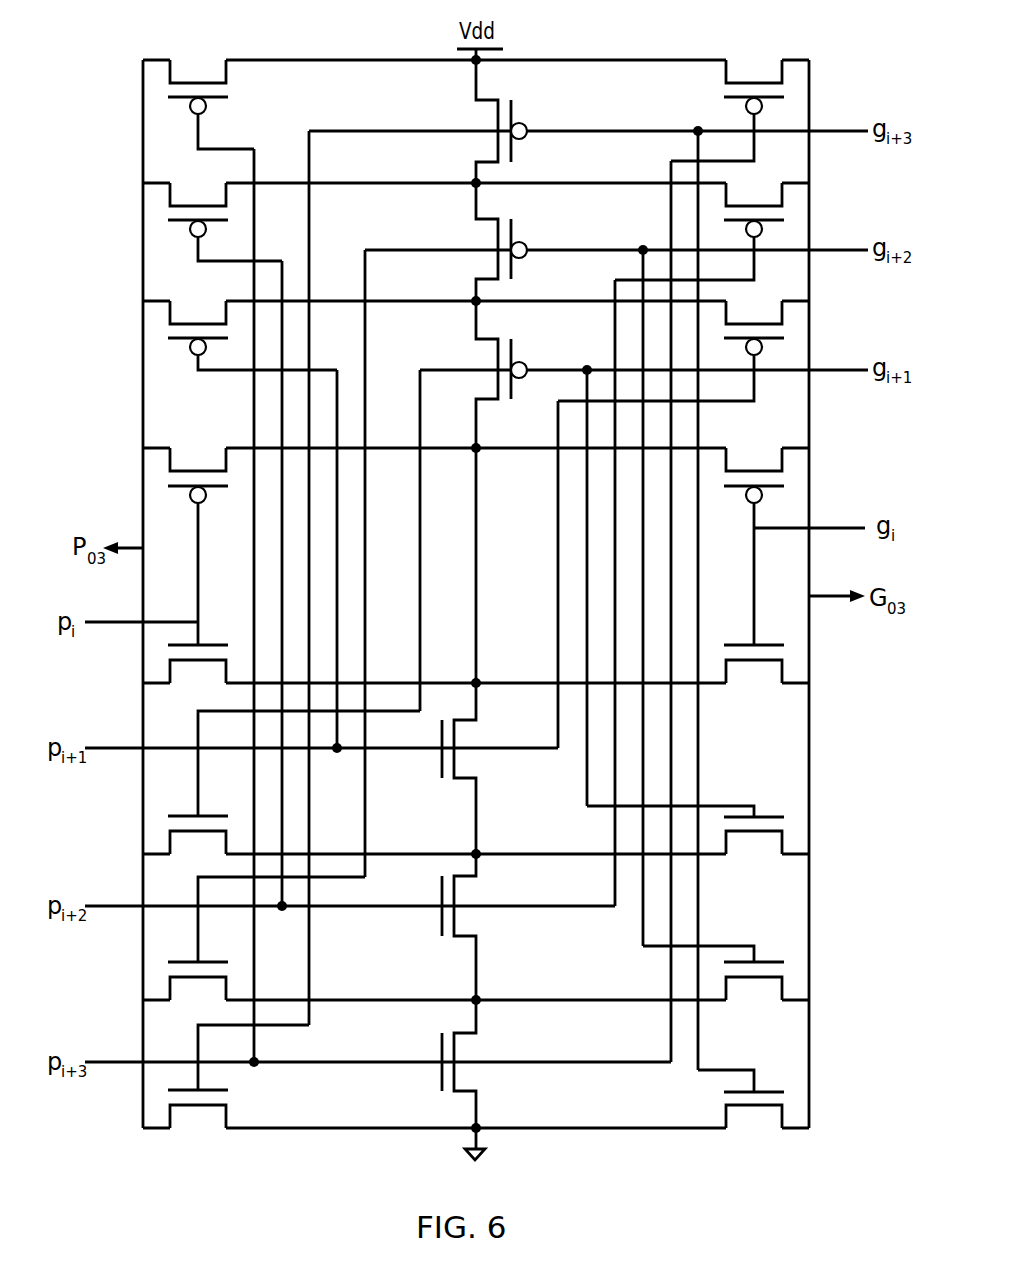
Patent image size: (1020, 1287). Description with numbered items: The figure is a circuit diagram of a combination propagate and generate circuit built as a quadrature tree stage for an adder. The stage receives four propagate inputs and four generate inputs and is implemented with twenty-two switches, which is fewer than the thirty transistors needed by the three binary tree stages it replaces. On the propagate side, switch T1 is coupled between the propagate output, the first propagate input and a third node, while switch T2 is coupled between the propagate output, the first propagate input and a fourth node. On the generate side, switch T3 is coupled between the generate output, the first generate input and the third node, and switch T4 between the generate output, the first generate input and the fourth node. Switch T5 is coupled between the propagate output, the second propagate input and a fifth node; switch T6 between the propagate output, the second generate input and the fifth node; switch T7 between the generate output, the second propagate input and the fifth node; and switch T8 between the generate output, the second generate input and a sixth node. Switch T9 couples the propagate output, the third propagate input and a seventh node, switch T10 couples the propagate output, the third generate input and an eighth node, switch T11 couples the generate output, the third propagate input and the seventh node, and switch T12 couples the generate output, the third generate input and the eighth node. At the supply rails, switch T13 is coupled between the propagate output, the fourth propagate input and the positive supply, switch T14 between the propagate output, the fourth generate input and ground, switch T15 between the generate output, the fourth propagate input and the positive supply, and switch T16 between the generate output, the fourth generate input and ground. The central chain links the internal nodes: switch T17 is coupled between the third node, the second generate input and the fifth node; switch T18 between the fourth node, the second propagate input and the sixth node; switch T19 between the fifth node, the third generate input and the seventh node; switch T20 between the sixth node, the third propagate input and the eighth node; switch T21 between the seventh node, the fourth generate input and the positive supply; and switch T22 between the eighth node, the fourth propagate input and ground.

The switch T1 is at (198, 534).
The switch T2 is at (198, 654).
The switch T3 is at (754, 546).
The switch T4 is at (754, 665).
The switch T5 is at (252, 335).
The switch T6 is at (294, 784).
The switch T7 is at (671, 350).
The switch T8 is at (685, 831).
The switch T9 is at (225, 221).
The switch T10 is at (266, 940).
The switch T11 is at (699, 231).
The switch T12 is at (713, 974).
The switch T13 is at (211, 104).
The switch T14 is at (238, 1078).
The switch T15 is at (727, 110).
The switch T16 is at (741, 1100).
The switch T17 is at (493, 374).
The switch T18 is at (468, 768).
The switch T19 is at (493, 242).
The switch T20 is at (468, 927).
The switch T21 is at (493, 121).
The switch T22 is at (468, 1064).